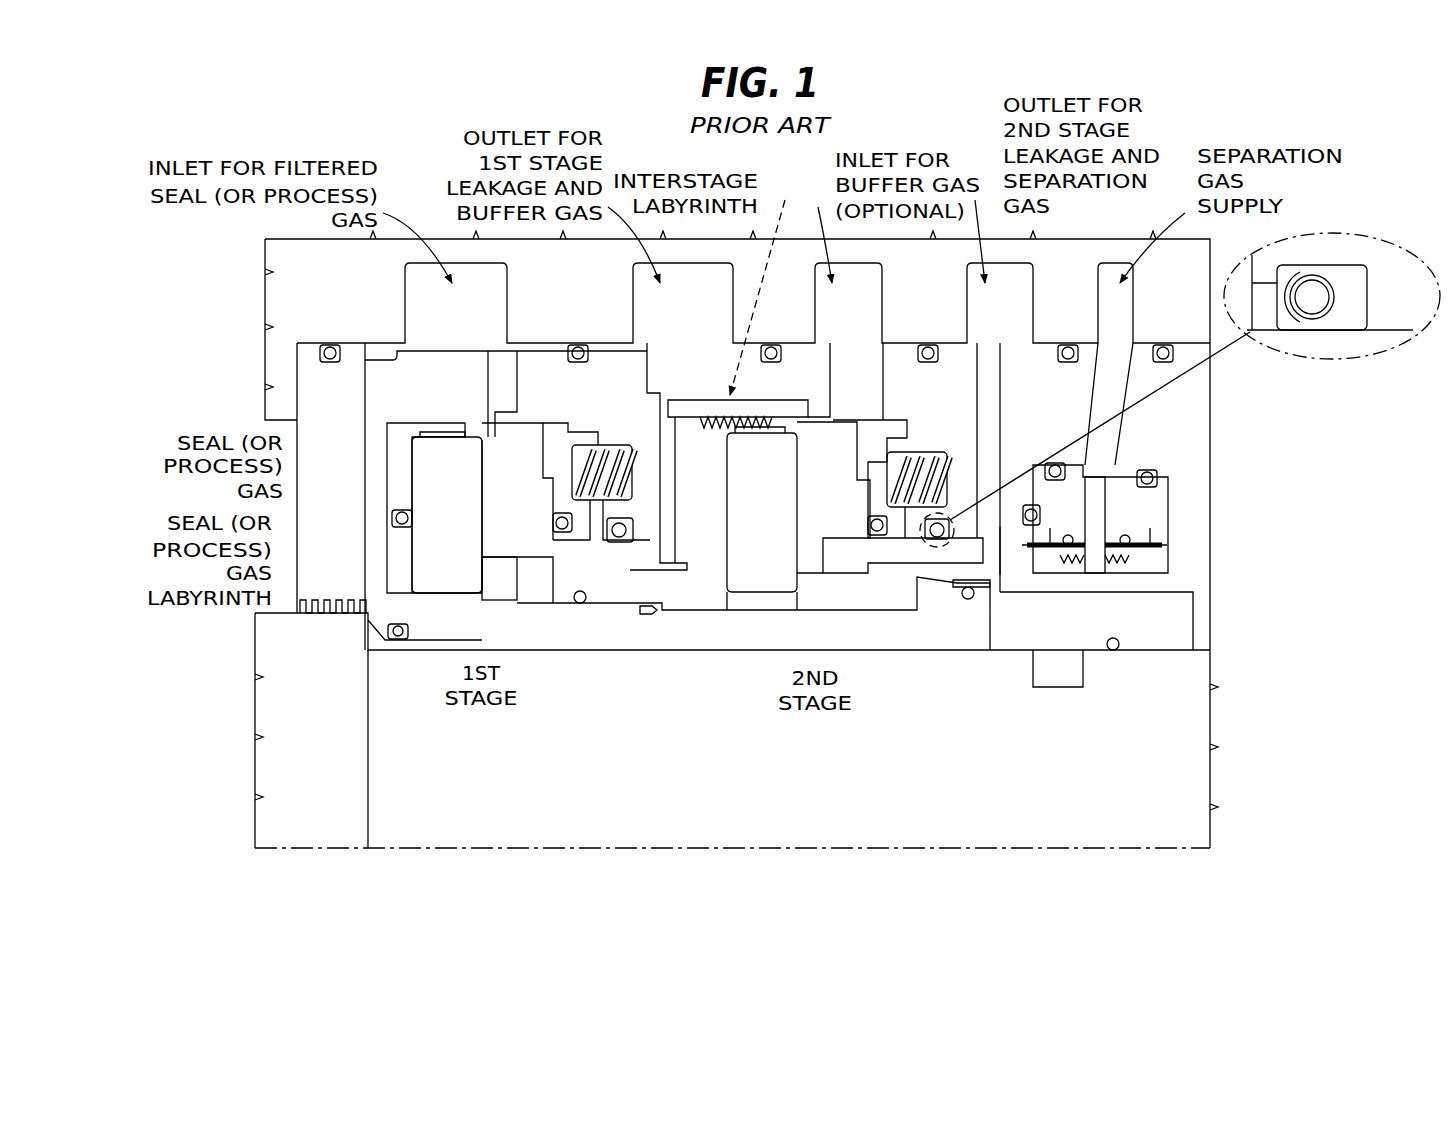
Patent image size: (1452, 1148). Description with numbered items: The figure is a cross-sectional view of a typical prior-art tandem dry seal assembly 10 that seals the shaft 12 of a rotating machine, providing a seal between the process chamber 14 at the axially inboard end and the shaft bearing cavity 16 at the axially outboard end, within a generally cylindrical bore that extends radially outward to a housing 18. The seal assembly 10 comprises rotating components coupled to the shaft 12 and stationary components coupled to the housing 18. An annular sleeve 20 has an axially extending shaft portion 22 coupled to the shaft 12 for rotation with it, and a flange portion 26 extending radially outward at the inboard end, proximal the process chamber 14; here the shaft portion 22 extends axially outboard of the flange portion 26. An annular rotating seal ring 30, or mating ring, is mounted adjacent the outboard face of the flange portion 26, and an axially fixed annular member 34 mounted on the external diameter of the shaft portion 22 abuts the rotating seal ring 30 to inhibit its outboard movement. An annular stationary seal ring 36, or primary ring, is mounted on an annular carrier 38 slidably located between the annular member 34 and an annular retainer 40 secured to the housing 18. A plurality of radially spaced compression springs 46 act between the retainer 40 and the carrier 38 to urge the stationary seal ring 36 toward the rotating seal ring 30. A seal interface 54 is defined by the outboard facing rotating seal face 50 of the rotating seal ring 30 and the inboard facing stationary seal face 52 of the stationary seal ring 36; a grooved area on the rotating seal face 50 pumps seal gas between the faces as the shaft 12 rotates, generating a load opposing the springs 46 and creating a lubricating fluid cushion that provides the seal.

The tandem dry seal assembly 10 is at (232, 127).
The shaft 12 is at (653, 803).
The process chamber 14 is at (290, 520).
The shaft bearing cavity 16 is at (1223, 467).
The housing 18 is at (564, 297).
The annular sleeve 20 is at (406, 617).
The shaft portion 22 is at (683, 637).
The flange portion 26 is at (378, 557).
The rotating seal ring 30 is at (426, 502).
The axially fixed annular member 34 is at (491, 593).
The stationary seal ring 36 is at (504, 487).
The annular carrier 38 is at (565, 557).
The annular retainer 40 is at (566, 406).
The compression springs 46 is at (640, 485).
The rotating seal face 50 is at (481, 455).
The stationary seal face 52 is at (533, 533).
The seal interface 54 is at (392, 632).